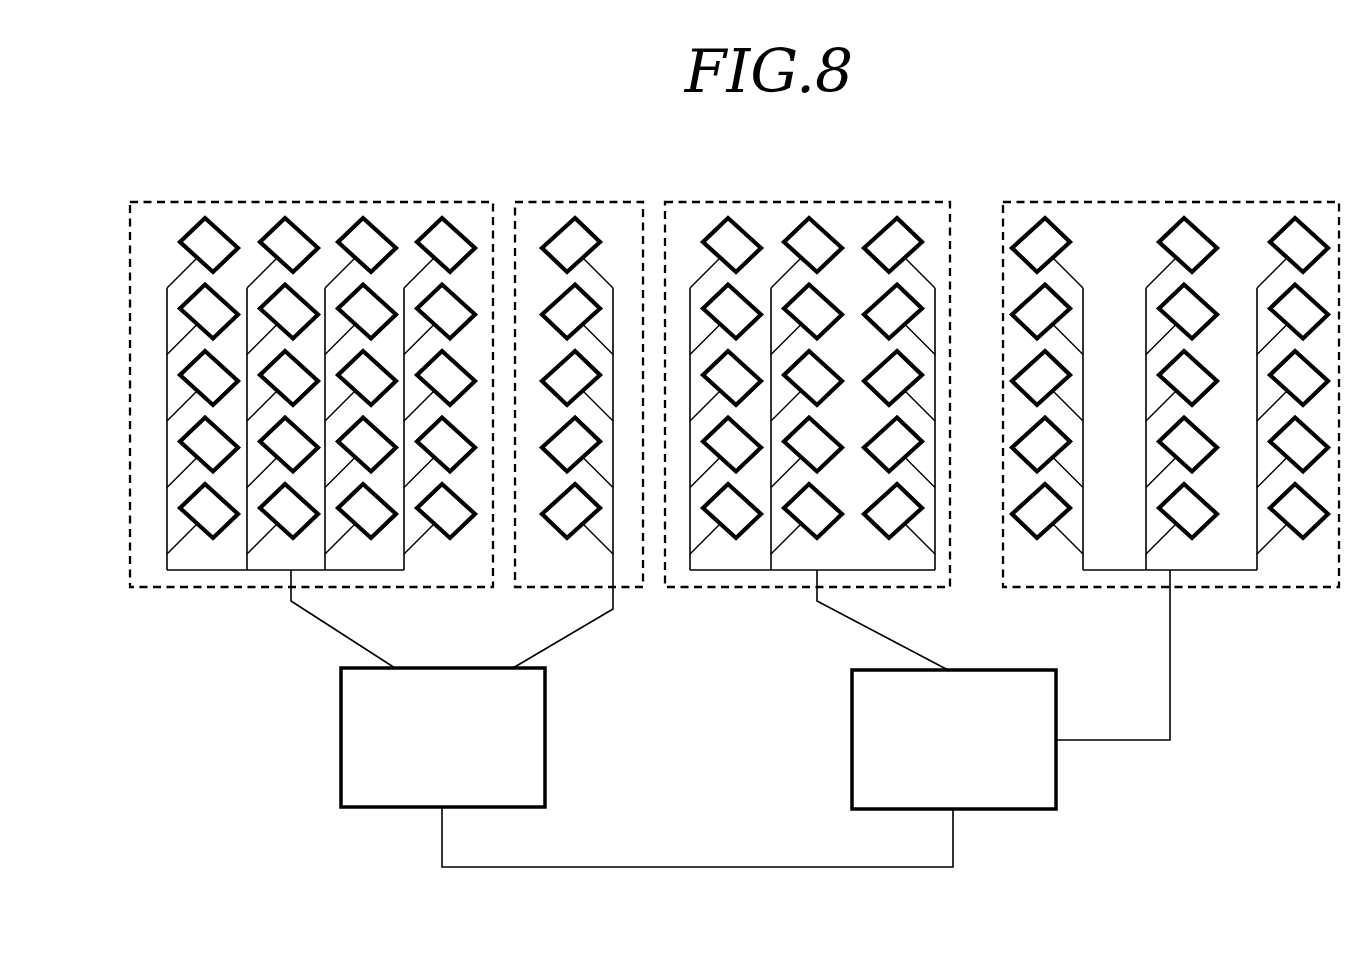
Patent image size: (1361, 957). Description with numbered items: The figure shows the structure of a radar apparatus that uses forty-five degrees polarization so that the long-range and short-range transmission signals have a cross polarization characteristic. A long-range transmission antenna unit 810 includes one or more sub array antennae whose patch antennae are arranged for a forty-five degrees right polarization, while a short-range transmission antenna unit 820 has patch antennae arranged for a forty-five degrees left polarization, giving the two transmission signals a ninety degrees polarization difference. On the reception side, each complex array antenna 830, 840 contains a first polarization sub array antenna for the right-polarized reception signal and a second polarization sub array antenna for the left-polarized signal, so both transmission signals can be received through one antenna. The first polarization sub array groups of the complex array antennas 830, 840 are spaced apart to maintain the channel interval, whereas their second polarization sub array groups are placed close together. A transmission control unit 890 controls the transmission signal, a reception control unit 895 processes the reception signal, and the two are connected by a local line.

The long-range transmission antenna unit 810 is at (446, 202).
The short-range transmission antenna unit 820 is at (545, 202).
The complex array antenna 830 is at (746, 202).
The complex array antenna 840 is at (1067, 202).
The transmission control unit 890 is at (375, 810).
The reception control unit 895 is at (1027, 812).